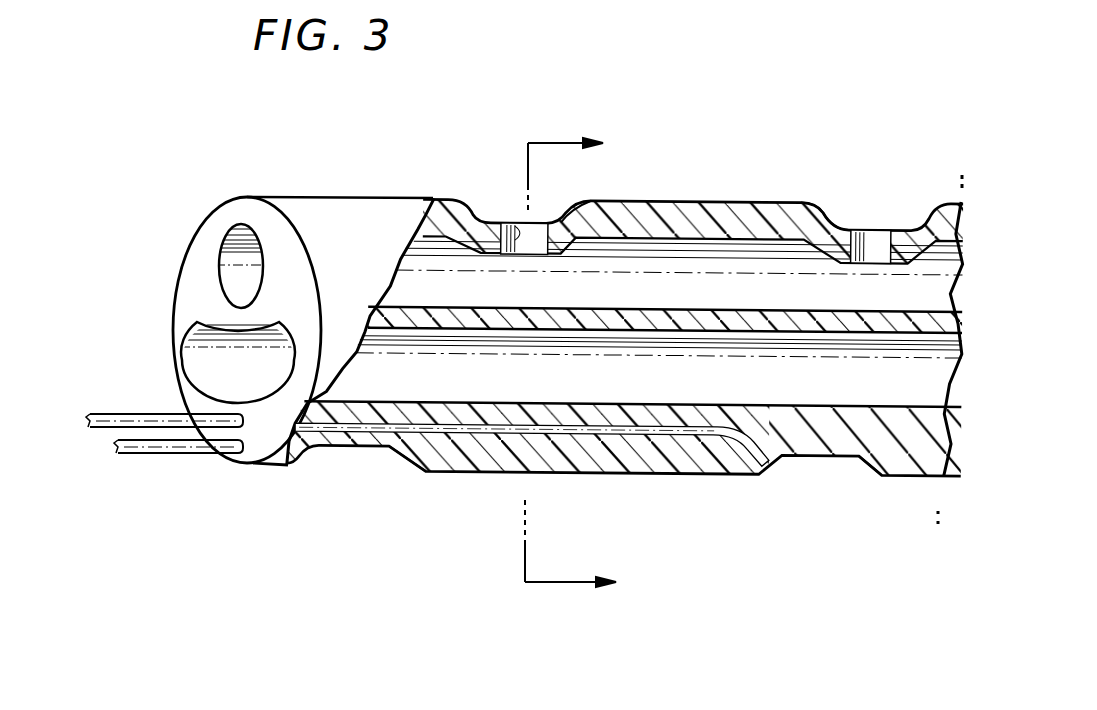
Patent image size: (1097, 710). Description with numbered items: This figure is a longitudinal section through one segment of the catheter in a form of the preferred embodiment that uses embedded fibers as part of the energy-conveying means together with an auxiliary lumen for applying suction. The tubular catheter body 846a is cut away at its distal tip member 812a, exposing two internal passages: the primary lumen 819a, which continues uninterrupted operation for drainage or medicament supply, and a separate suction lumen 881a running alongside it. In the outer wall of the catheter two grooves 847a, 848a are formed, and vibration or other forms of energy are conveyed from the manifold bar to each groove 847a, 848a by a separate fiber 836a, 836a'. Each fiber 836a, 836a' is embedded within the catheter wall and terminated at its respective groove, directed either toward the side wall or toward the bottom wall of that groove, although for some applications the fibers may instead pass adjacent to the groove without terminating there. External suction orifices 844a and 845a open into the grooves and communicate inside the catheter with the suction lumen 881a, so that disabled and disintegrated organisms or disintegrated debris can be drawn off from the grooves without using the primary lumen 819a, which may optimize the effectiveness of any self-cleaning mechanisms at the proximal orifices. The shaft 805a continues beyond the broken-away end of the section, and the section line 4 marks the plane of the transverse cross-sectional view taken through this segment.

The section line 4- 4 is at (570, 372).
The catheter shaft 805a is at (953, 200).
The distal tip member 812a is at (395, 283).
The primary lumen 819a is at (225, 372).
The fiber 836a is at (424, 411).
The fiber 836a' is at (196, 500).
The external suction orifice 844a is at (517, 220).
The external suction orifice 845a is at (887, 228).
The tip body wall 846a is at (360, 213).
The groove 847a is at (578, 205).
The groove 848a is at (838, 206).
The suction lumen 881a is at (237, 273).